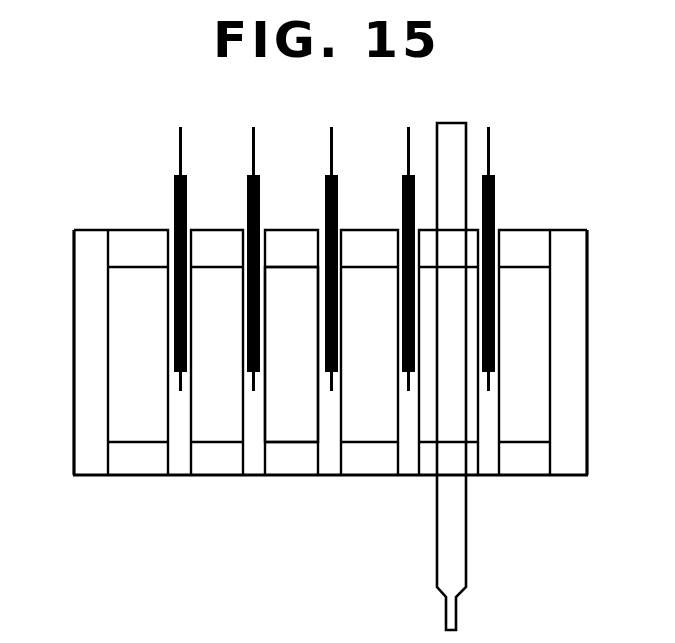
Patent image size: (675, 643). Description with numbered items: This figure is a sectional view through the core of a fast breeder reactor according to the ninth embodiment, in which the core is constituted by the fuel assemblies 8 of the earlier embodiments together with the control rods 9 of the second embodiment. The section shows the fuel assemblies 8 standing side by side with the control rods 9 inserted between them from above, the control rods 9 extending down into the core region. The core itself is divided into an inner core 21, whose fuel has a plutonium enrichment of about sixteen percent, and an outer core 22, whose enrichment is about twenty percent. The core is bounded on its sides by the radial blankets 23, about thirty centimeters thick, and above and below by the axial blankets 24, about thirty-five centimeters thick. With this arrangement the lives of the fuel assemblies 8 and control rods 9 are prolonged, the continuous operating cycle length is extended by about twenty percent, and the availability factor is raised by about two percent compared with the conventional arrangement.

The fuel assembly 8 is at (448, 549).
The control rod 9 is at (175, 190).
The inner core 21 is at (288, 405).
The outer core 22 is at (128, 326).
The radial blanket 23 is at (74, 380).
The axial blanket 24 is at (134, 247).